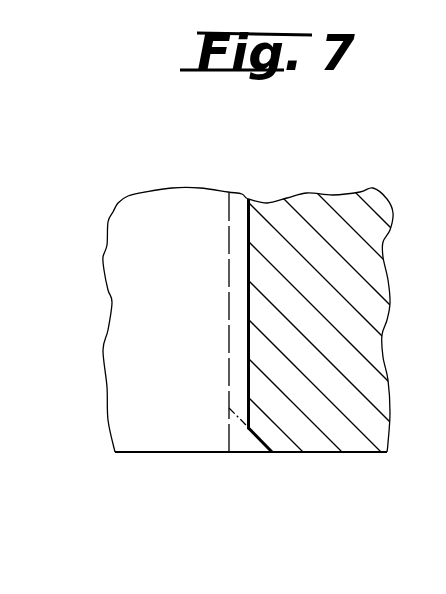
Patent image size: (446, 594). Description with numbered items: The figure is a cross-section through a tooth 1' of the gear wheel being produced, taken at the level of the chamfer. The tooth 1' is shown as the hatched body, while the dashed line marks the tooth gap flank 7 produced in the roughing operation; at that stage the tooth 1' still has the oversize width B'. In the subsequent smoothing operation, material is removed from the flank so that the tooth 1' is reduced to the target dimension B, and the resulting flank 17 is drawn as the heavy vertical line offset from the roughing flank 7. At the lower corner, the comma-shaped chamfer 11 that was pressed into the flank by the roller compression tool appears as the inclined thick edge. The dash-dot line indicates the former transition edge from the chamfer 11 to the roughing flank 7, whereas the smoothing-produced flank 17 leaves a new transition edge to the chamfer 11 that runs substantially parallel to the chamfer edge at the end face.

The tooth 1' is at (223, 348).
The tooth gap flank 7 is at (230, 323).
The flank 17 is at (248, 260).
The chamfer 11 is at (262, 442).